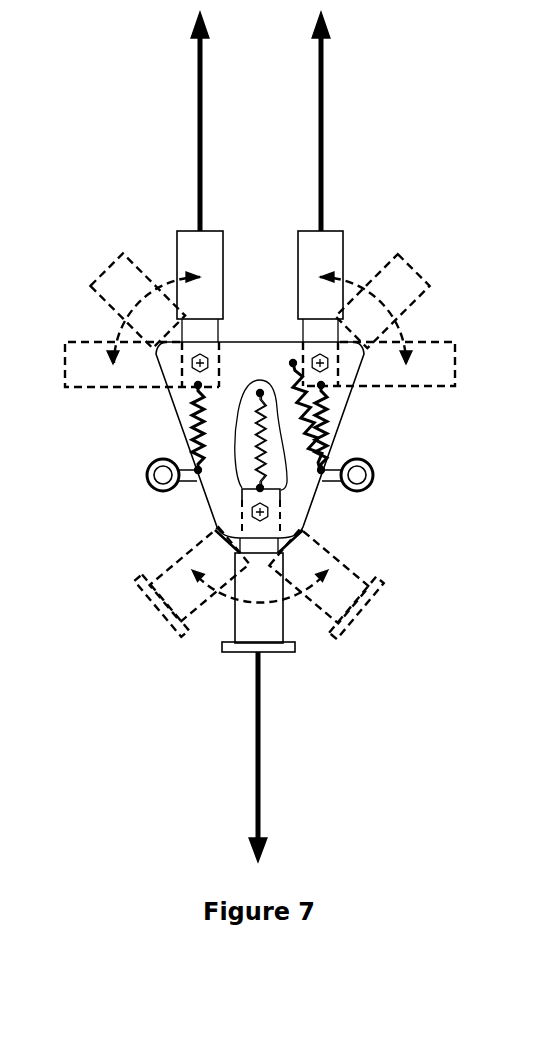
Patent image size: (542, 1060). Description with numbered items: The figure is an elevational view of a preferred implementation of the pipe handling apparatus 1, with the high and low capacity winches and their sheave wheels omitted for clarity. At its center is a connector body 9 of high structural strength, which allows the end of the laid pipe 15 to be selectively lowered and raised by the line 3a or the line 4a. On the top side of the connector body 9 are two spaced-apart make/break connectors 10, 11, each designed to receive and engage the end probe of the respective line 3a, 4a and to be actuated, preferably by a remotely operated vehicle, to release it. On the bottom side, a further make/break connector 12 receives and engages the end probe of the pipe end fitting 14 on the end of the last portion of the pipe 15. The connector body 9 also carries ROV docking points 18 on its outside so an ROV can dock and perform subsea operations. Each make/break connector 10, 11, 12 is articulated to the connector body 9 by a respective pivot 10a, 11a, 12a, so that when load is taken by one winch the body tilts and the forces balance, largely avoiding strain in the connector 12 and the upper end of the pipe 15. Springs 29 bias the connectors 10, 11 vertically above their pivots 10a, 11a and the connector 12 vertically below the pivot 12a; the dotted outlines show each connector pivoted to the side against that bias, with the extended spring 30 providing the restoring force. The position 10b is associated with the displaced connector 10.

The pipe handling apparatus 1 is at (450, 323).
The line 3a is at (197, 140).
The line 4a is at (325, 145).
The connector body 9 is at (342, 395).
The make/break connector 10 is at (188, 247).
The pivot 10a is at (192, 367).
The pivoted position of first arm 10b is at (182, 383).
The make/break connector 11 is at (333, 252).
The pivot 11a is at (327, 368).
The make/break connector 12 is at (262, 617).
The pivot 12a is at (252, 510).
The pipe end fitting 14 is at (232, 648).
The pipe 15 is at (262, 705).
The ROV docking point 18 is at (142, 485).
The springs 29 is at (193, 420).
The extended spring 30 is at (300, 395).